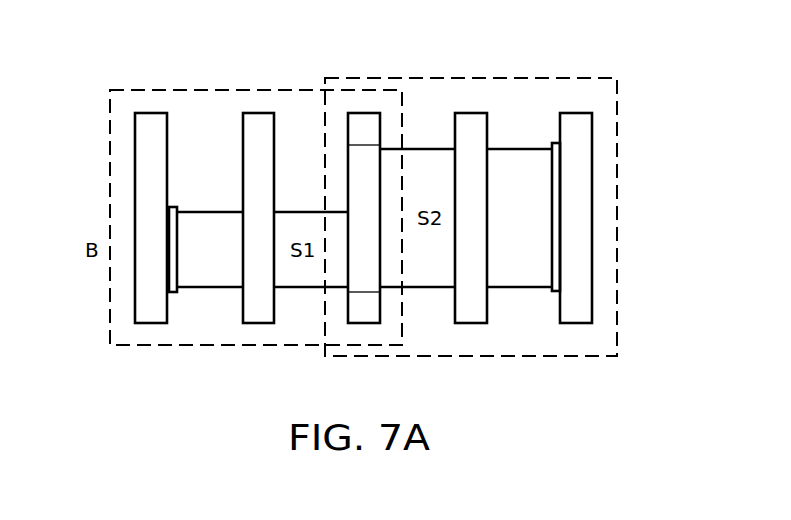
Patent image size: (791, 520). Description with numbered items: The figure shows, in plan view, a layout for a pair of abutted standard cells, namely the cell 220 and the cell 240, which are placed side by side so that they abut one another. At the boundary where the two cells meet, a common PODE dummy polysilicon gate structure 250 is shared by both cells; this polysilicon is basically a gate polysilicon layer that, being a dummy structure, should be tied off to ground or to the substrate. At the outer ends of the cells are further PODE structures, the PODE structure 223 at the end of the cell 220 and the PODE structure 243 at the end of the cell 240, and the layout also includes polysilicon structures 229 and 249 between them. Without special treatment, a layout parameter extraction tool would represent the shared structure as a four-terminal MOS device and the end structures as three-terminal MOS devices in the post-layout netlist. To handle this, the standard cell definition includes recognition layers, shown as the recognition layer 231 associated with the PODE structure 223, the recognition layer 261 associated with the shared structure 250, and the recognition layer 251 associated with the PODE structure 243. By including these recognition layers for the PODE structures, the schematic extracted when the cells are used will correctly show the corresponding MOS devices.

The cell 220 is at (290, 61).
The cell 240 is at (438, 61).
The PODE structure 223 is at (135, 185).
The second plate 229 is at (258, 112).
The common PODE dummy polysilicon gate structure 250 is at (363, 112).
The third plate 249 is at (468, 112).
The PODE structure 243 is at (595, 210).
The recognition layer 231 is at (175, 262).
The recognition layer 251 is at (552, 265).
The recognition layer 261 is at (365, 280).